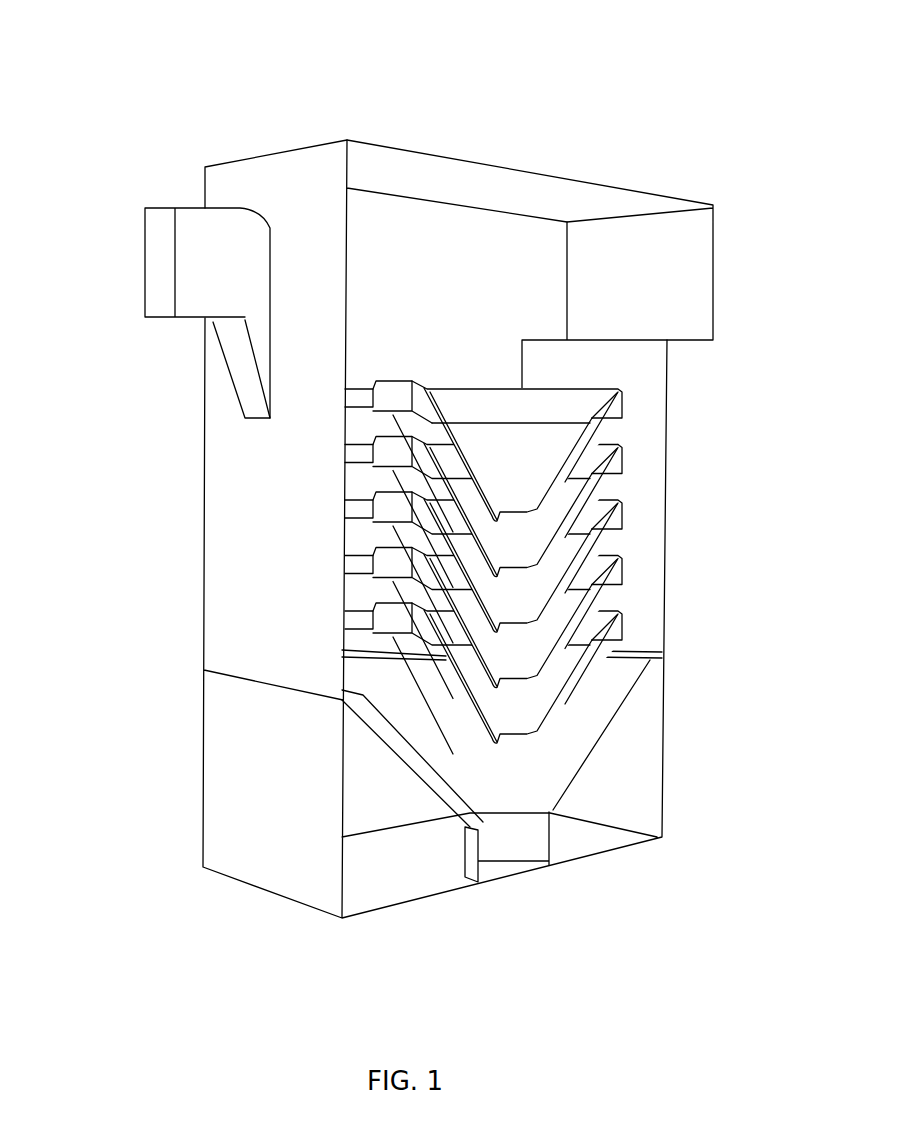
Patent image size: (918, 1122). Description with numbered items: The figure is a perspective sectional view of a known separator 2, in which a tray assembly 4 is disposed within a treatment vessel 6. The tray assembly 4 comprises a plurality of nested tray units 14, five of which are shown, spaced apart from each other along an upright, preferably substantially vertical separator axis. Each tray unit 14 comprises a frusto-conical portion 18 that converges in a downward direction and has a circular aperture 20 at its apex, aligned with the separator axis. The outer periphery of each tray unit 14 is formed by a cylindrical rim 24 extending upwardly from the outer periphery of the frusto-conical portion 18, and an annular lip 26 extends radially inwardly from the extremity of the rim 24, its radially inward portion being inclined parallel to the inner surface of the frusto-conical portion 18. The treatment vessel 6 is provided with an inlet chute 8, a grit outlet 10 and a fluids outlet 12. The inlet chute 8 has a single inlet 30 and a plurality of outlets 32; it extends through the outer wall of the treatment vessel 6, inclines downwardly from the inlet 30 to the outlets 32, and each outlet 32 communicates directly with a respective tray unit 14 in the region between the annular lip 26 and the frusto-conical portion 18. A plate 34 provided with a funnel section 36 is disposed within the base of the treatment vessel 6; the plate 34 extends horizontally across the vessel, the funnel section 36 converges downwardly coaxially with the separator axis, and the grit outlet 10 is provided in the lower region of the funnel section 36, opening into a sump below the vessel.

The separator 2 is at (410, 476).
The tray assembly 4 is at (448, 383).
The treatment vessel 6 is at (268, 548).
The inlet chute 8 is at (233, 360).
The grit outlet 10 is at (500, 867).
The fluids outlet 12 is at (662, 261).
The tray unit 14 is at (548, 433).
The frusto-conical portion 18 is at (440, 512).
The circular aperture 20 is at (527, 512).
The cylindrical rim 24 is at (675, 458).
The annular lip 26 is at (590, 402).
The inlet 30 is at (150, 255).
The outlets 32 is at (355, 388).
The plate 34 is at (650, 660).
The funnel section 36 is at (377, 737).